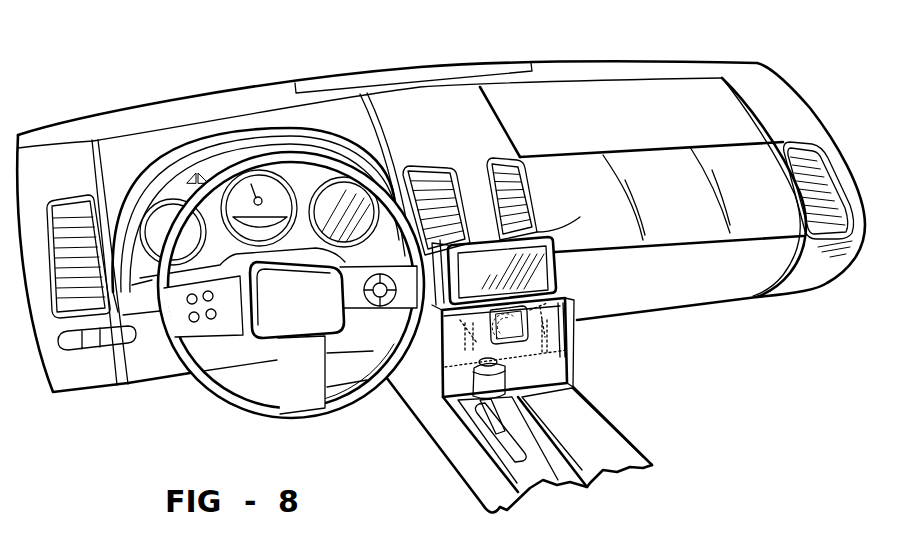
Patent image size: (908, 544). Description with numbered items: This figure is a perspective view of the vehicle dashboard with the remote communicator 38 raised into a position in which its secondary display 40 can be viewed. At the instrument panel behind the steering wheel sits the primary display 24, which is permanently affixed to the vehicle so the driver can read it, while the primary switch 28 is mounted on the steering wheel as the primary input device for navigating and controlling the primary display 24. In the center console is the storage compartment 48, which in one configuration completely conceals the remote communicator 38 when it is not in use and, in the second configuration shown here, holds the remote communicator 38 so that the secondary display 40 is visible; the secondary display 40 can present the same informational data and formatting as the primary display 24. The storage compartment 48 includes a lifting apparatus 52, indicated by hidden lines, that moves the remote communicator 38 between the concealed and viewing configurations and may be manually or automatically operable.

The primary display 24 is at (325, 200).
The primary switch 28 is at (369, 302).
The remote communicator 38 is at (548, 249).
The secondary display 40 is at (555, 262).
The storage compartment 48 is at (575, 333).
The lifting apparatus 52 is at (443, 365).